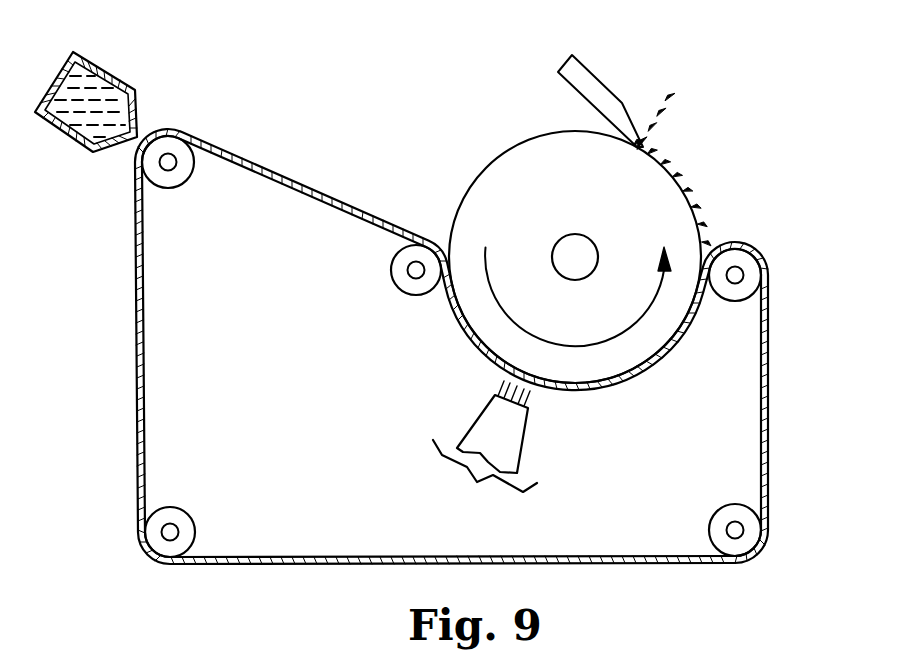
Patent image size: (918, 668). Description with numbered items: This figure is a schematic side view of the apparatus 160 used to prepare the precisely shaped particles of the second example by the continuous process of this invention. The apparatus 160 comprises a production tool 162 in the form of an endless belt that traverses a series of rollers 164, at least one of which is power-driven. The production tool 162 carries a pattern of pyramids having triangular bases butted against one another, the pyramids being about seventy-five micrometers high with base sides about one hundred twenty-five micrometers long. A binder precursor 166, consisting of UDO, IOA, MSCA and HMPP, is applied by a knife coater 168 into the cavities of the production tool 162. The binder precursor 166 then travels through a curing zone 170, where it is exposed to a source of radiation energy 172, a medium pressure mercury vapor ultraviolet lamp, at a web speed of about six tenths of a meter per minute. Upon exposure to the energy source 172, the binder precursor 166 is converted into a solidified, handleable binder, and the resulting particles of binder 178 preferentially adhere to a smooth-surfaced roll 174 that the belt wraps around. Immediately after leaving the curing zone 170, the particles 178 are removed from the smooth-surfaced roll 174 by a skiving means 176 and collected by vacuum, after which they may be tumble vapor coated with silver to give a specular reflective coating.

The apparatus 160 is at (455, 150).
The production tool 162 is at (288, 188).
The rollers 164 is at (180, 169).
The binder precursor 166 is at (117, 104).
The knife coater 168 is at (78, 63).
The curing zone 170 is at (485, 475).
The source of radiation energy 172 is at (497, 422).
The smooth-surfaced roll 174 is at (530, 178).
The skiving means 176 is at (580, 79).
The particles of binder 178 is at (667, 170).